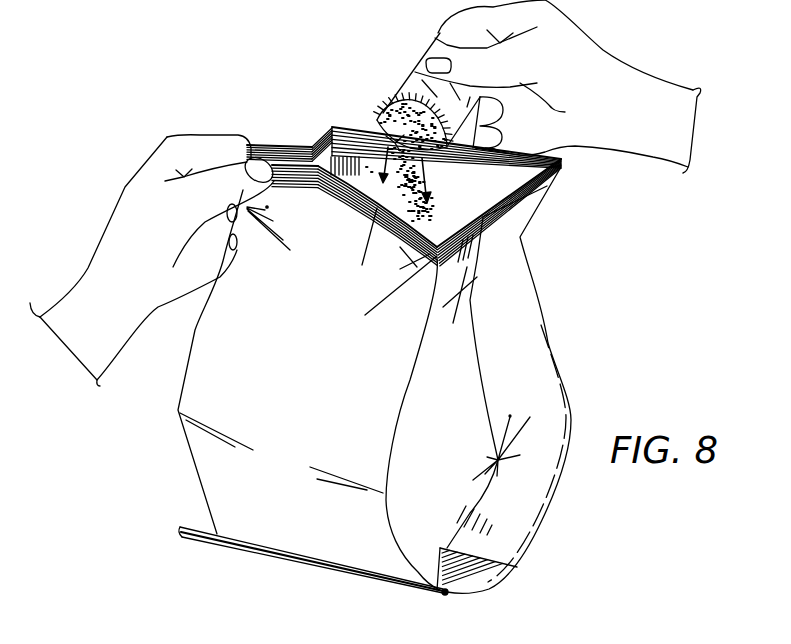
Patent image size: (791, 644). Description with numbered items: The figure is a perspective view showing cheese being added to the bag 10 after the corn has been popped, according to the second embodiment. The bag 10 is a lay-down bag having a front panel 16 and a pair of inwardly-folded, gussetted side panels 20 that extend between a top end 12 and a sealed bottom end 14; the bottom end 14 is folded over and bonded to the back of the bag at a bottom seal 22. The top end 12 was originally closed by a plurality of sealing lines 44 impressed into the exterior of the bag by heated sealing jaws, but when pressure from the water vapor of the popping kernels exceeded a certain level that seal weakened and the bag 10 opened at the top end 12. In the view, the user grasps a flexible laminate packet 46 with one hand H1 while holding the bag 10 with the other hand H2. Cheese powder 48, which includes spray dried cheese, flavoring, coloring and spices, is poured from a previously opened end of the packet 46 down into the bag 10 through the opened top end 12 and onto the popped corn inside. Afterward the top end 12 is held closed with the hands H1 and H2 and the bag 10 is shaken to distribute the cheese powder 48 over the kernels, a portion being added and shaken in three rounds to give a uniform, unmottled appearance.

The bag 10 is at (201, 479).
The top end 12 is at (548, 184).
The bottom end 14 is at (330, 567).
The front panel 16 is at (307, 344).
The gussetted side panels 20 is at (525, 335).
The bottom seal 22 is at (452, 594).
The sealing lines 44 is at (287, 166).
The packet 46 is at (413, 73).
The cheese powder 48 is at (358, 152).
The hand H1 is at (603, 60).
The hand H2 is at (133, 190).